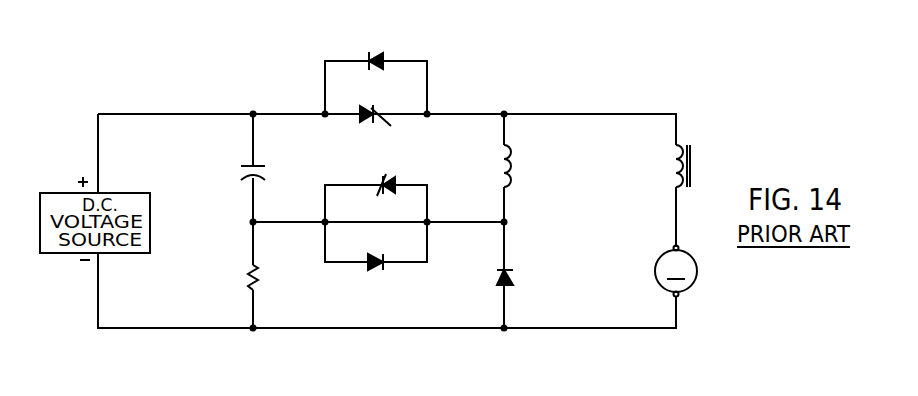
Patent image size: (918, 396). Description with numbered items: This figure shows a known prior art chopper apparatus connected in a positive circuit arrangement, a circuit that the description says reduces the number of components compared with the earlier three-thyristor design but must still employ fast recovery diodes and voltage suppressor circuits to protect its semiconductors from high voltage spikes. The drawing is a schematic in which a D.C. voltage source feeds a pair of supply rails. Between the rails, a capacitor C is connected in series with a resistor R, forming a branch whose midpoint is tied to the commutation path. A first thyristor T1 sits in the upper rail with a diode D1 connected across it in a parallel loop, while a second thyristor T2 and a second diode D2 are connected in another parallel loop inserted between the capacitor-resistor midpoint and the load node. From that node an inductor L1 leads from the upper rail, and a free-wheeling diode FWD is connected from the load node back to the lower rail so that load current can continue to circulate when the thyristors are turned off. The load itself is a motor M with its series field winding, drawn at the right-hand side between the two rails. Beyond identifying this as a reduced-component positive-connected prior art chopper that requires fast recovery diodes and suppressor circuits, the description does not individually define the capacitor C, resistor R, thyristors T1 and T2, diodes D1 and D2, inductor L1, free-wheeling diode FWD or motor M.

The capacitor C is at (234, 170).
The resistor R is at (262, 280).
The thyristor T1 is at (367, 102).
The diode D1 is at (373, 73).
The thyristor T2 is at (382, 197).
The diode D2 is at (378, 256).
The inductor L1 is at (513, 170).
The free-wheeling diode FWD is at (518, 275).
The motor M is at (676, 221).